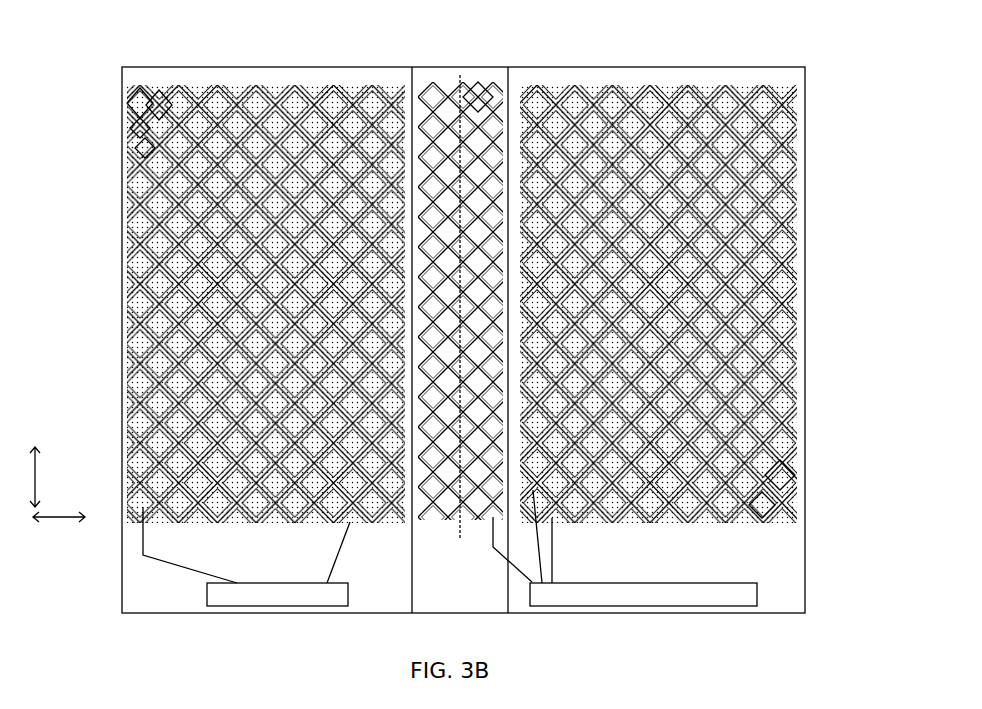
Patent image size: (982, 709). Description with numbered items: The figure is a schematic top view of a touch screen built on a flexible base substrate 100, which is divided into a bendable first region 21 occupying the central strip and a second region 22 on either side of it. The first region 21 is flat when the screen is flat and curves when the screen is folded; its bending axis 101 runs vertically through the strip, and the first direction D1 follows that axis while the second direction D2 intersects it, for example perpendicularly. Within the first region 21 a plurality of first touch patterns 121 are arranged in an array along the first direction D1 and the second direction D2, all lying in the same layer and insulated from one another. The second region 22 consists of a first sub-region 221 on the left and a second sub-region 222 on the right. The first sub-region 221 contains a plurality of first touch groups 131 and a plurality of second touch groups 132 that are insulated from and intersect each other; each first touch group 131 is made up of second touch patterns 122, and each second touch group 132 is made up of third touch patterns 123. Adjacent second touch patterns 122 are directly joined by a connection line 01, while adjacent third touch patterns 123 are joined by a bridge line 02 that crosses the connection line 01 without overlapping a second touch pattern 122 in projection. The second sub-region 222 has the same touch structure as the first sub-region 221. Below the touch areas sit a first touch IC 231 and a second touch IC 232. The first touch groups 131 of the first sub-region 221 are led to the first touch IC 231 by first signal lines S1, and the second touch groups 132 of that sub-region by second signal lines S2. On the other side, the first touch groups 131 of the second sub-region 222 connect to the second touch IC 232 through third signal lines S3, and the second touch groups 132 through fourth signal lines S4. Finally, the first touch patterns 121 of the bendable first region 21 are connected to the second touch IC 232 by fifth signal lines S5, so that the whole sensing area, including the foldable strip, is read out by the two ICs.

The base substrate 100 is at (806, 268).
The first region 21 is at (438, 72).
The bending axis 101 is at (462, 90).
The first touch pattern 121 is at (478, 95).
The second region 22 is at (462, 264).
The first sub-region 221 is at (306, 80).
The second sub-region 222 is at (595, 85).
The second touch pattern 122 is at (136, 88).
The first touch group 131 is at (150, 92).
The second touch group 132 is at (138, 130).
The third touch pattern 123 is at (140, 148).
The connection line 01 is at (790, 478).
The bridge line 02 is at (762, 505).
The first touch IC 231 is at (277, 580).
The second touch IC 232 is at (643, 580).
The first signal line S1 is at (190, 545).
The second signal line S2 is at (346, 552).
The third signal line S3 is at (529, 536).
The fourth signal line S4 is at (564, 550).
The fifth signal line S5 is at (508, 549).
The first direction D1 is at (42, 461).
The second direction D2 is at (72, 518).